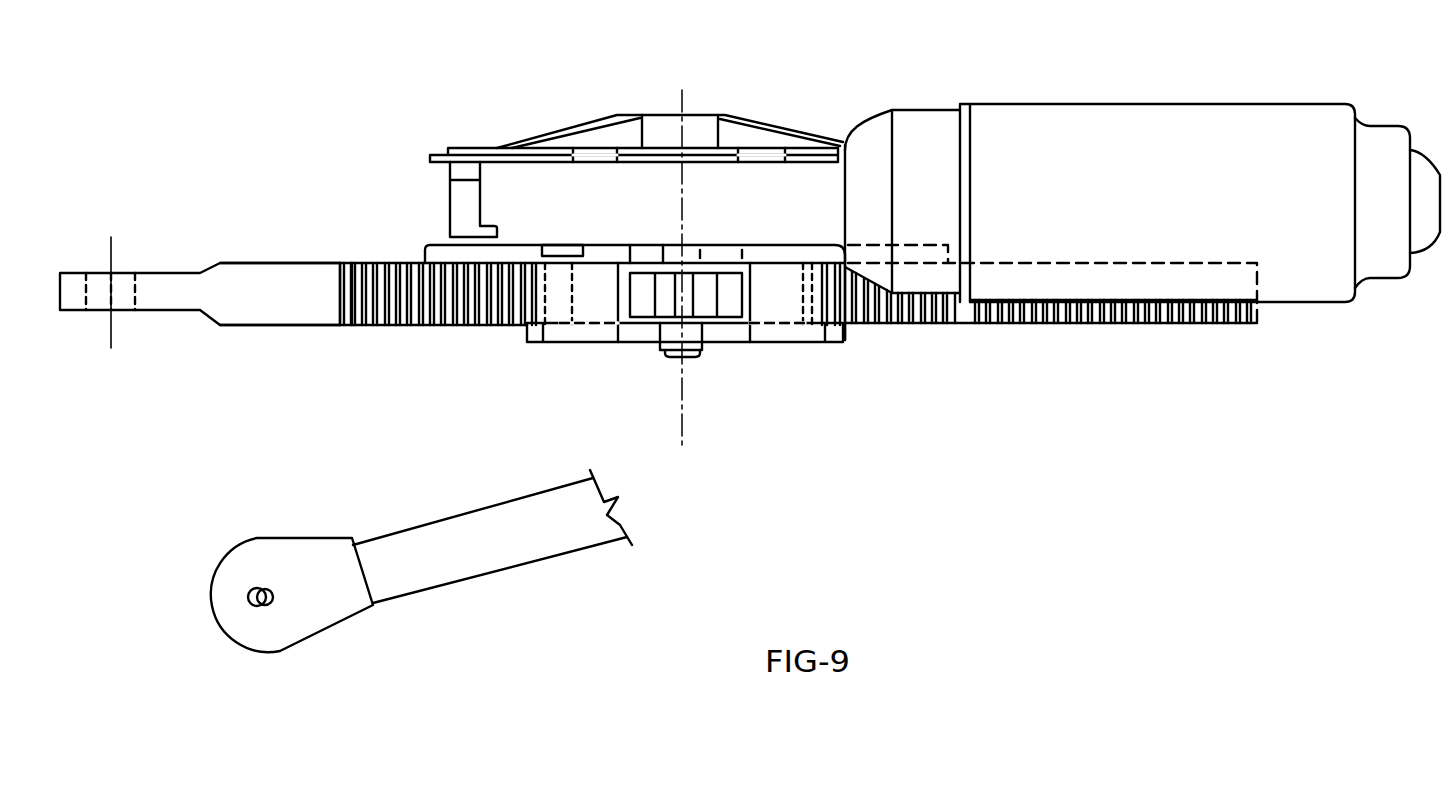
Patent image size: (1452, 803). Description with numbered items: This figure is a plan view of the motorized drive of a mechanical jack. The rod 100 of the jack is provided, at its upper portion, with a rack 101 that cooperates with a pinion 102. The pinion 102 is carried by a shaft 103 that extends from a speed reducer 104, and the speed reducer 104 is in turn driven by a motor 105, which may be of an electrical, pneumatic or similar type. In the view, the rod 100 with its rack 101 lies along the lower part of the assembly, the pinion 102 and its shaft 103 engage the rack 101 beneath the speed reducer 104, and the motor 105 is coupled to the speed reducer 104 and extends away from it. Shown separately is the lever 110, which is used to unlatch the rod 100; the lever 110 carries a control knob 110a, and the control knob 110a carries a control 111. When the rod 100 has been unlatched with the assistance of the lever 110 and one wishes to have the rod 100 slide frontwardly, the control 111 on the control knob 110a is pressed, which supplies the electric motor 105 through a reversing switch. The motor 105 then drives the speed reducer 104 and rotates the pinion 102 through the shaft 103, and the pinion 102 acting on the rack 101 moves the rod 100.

The rod 100 is at (277, 262).
The rack 101 is at (437, 325).
The pinion 102 is at (712, 305).
The shaft 103 is at (677, 345).
The speed reducer 104 is at (537, 188).
The motor 105 is at (1203, 130).
The lever 110 is at (527, 543).
The control knob 110a is at (338, 605).
The control 111 is at (254, 588).